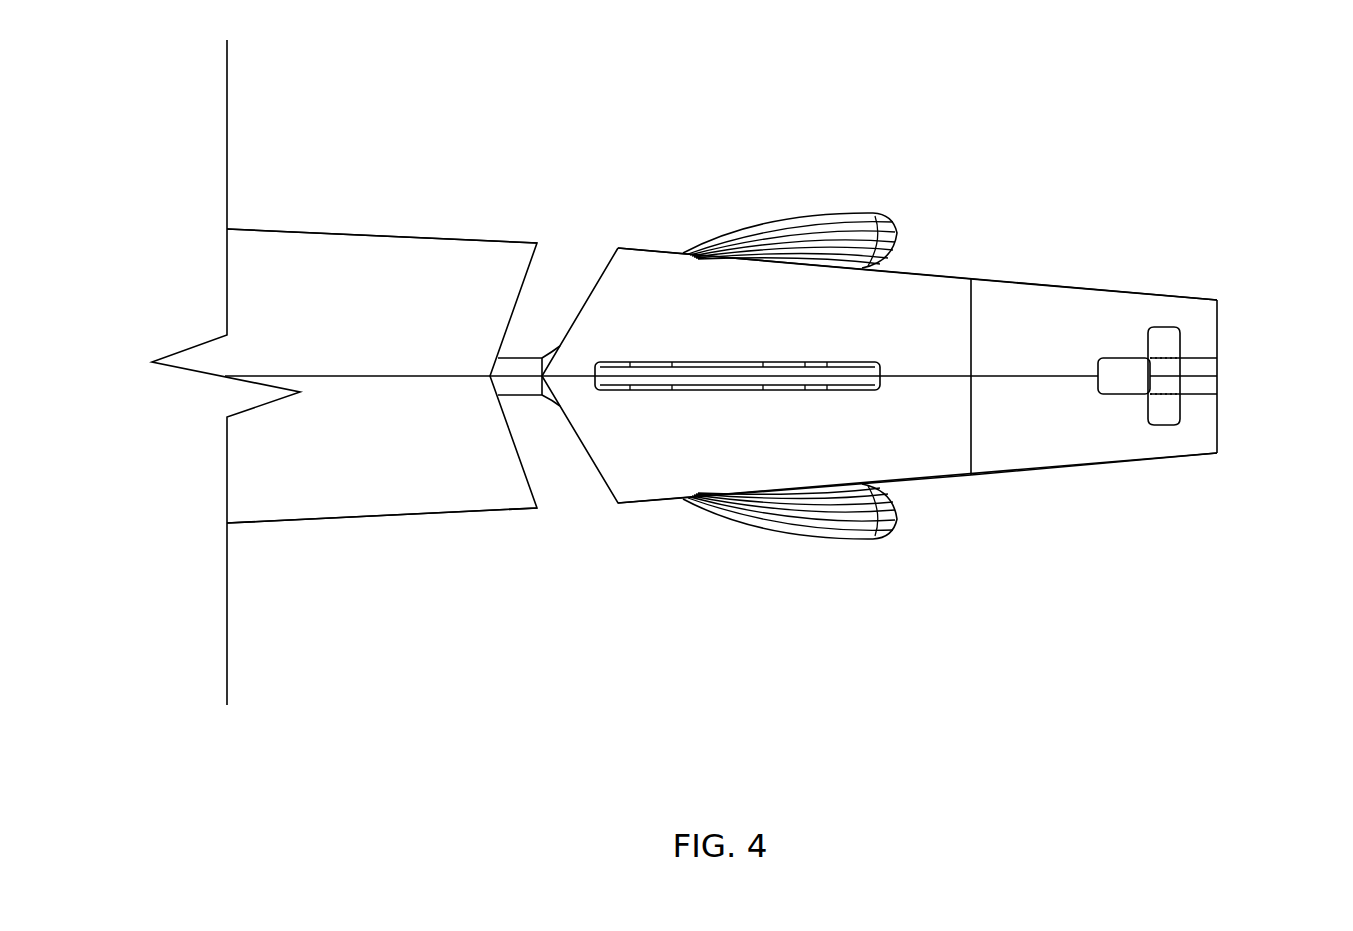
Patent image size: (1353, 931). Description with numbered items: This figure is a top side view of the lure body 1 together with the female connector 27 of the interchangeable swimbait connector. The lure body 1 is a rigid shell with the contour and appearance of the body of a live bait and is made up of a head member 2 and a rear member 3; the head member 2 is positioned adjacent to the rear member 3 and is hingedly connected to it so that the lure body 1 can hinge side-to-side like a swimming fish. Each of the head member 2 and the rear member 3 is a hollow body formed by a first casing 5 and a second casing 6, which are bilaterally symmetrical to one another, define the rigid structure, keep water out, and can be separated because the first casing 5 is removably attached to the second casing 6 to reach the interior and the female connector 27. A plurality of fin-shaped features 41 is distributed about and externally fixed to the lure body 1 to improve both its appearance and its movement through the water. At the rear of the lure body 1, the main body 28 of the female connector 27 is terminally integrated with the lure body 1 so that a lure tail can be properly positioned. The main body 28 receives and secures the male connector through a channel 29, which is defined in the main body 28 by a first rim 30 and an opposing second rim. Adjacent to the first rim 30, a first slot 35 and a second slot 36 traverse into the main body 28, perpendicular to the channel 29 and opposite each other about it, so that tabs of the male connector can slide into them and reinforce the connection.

The lure body 1 is at (529, 190).
The head member 2 is at (361, 203).
The rear member 3 is at (925, 237).
The first casing 5 is at (442, 240).
The second casing 6 is at (440, 510).
The female connector 27 is at (1078, 266).
The main body 28 is at (1210, 310).
The channel 29 is at (1218, 369).
The first rim 30 is at (1098, 365).
The first slot 35 is at (1146, 350).
The second slot 36 is at (1146, 408).
The fin-shaped features 41 is at (768, 225).